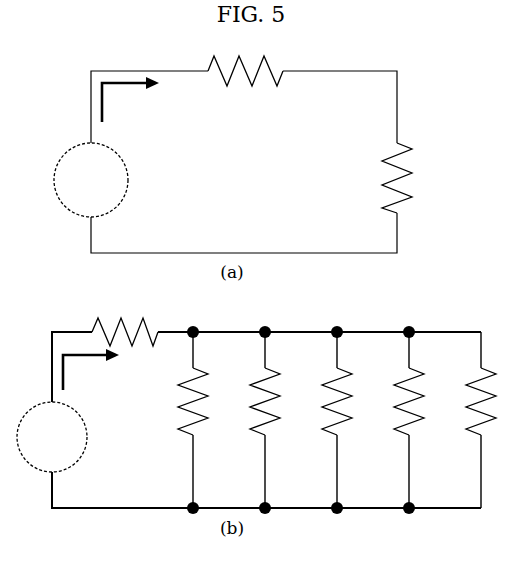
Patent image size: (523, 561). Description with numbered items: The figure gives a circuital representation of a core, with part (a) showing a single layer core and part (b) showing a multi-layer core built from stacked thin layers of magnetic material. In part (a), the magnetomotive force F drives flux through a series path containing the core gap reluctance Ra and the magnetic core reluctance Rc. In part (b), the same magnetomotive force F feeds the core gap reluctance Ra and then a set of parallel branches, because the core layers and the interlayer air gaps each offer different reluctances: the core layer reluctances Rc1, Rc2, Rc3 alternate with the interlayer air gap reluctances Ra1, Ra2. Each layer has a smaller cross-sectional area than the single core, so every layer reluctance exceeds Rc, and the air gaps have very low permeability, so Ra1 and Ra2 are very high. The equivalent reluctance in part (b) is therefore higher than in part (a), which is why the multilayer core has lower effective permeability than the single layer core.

The core gap reluctance Ra is at (245, 83).
The magnetic core reluctance Rc is at (381, 178).
The magnetomotive force F is at (91, 180).
The first core layer reluctance Rc1 is at (181, 420).
The first interlayer air gap reluctance Ra1 is at (253, 420).
The second core layer reluctance Rc2 is at (325, 420).
The second interlayer air gap reluctance Ra2 is at (397, 420).
The third core layer reluctance Rc3 is at (468, 420).